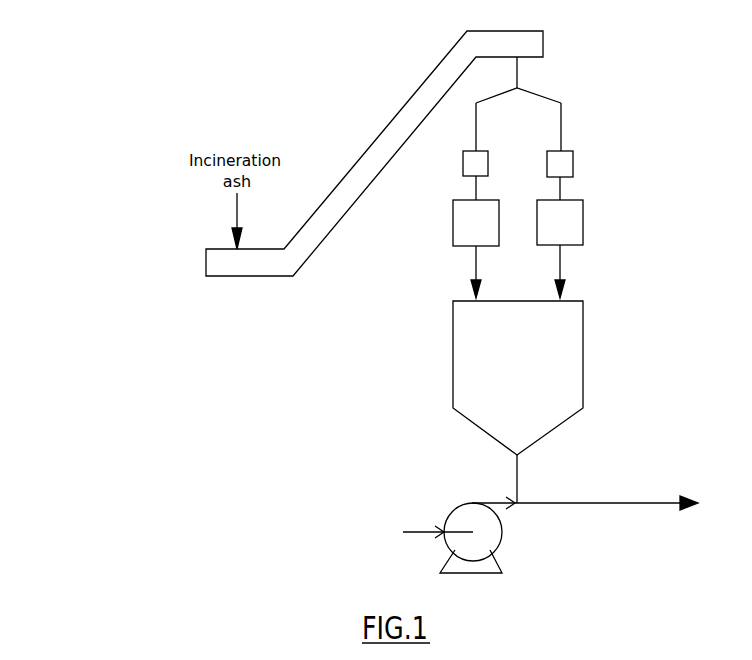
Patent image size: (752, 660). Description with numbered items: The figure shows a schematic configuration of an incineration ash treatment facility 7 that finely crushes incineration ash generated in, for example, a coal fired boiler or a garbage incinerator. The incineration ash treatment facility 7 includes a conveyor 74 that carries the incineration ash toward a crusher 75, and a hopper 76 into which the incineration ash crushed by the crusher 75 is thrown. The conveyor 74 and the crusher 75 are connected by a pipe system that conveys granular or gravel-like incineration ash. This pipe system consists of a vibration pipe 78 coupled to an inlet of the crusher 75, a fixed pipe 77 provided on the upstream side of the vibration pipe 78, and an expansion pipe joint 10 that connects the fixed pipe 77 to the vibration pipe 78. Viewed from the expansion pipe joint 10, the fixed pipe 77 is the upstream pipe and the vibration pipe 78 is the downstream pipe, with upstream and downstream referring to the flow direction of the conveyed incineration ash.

The incineration ash treatment facility 7 is at (165, 195).
The conveyor 74 is at (362, 157).
The fixed pipe 77 is at (476, 118).
The expansion pipe joint 10 is at (463, 169).
The vibration pipe 78 is at (475, 190).
The crusher 75 is at (453, 235).
The hopper 76 is at (537, 388).